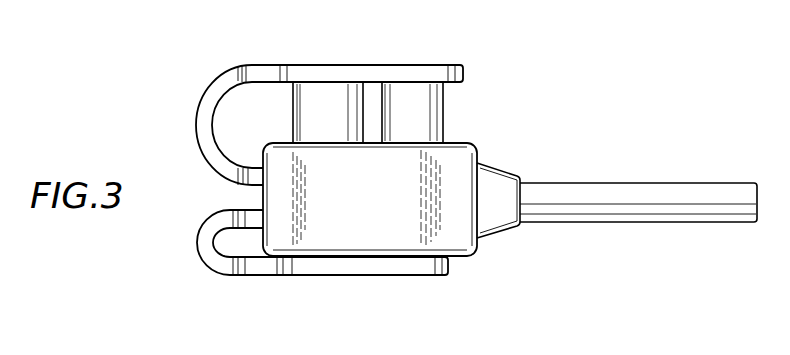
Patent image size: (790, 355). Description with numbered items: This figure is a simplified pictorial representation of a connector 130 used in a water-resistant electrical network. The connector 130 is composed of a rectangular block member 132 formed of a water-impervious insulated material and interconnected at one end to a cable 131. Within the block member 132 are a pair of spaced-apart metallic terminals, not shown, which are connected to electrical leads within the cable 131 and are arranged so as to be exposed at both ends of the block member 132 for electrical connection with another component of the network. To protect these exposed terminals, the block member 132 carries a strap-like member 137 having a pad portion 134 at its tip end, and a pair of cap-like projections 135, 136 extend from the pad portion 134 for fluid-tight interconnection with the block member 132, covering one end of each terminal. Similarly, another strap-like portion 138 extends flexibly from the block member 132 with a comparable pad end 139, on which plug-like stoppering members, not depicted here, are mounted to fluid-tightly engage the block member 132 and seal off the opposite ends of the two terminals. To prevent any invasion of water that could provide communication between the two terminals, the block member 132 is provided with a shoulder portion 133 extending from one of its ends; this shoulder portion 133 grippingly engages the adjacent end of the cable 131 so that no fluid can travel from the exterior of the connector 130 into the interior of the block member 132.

The connector 130 is at (622, 113).
The cable 131 is at (653, 184).
The block member 132 is at (465, 161).
The shoulder portion 133 is at (502, 189).
The pad portion 134 is at (362, 65).
The cap-like projection 135 is at (293, 112).
The cap-like projection 136 is at (443, 112).
The strap-like member 137 is at (202, 105).
The strap-like portion 138 is at (197, 252).
The pad end 139 is at (355, 276).